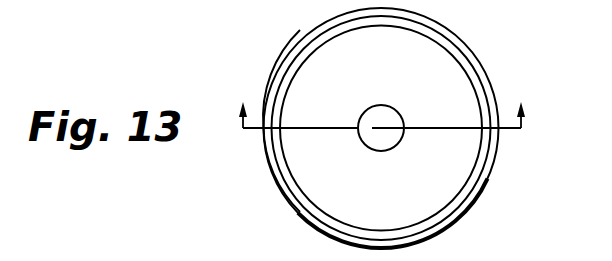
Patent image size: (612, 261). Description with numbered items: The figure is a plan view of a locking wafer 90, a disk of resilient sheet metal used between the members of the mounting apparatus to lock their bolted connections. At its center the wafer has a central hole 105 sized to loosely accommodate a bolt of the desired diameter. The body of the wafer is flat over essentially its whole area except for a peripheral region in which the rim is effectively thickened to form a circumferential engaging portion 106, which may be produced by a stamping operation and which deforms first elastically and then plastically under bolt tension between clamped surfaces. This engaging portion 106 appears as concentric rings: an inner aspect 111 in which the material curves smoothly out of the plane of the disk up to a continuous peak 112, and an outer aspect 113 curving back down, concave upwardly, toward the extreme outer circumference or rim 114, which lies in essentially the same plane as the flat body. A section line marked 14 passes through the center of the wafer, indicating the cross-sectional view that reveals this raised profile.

The section line 14- 14 is at (377, 130).
The locking wafer 90 is at (443, 27).
The central hole 105 is at (391, 108).
The circumferential engaging portion 106 is at (481, 181).
The inner aspect 111 is at (307, 57).
The peak 112 is at (313, 36).
The outer aspect 113 is at (283, 61).
The rim 114 is at (279, 185).